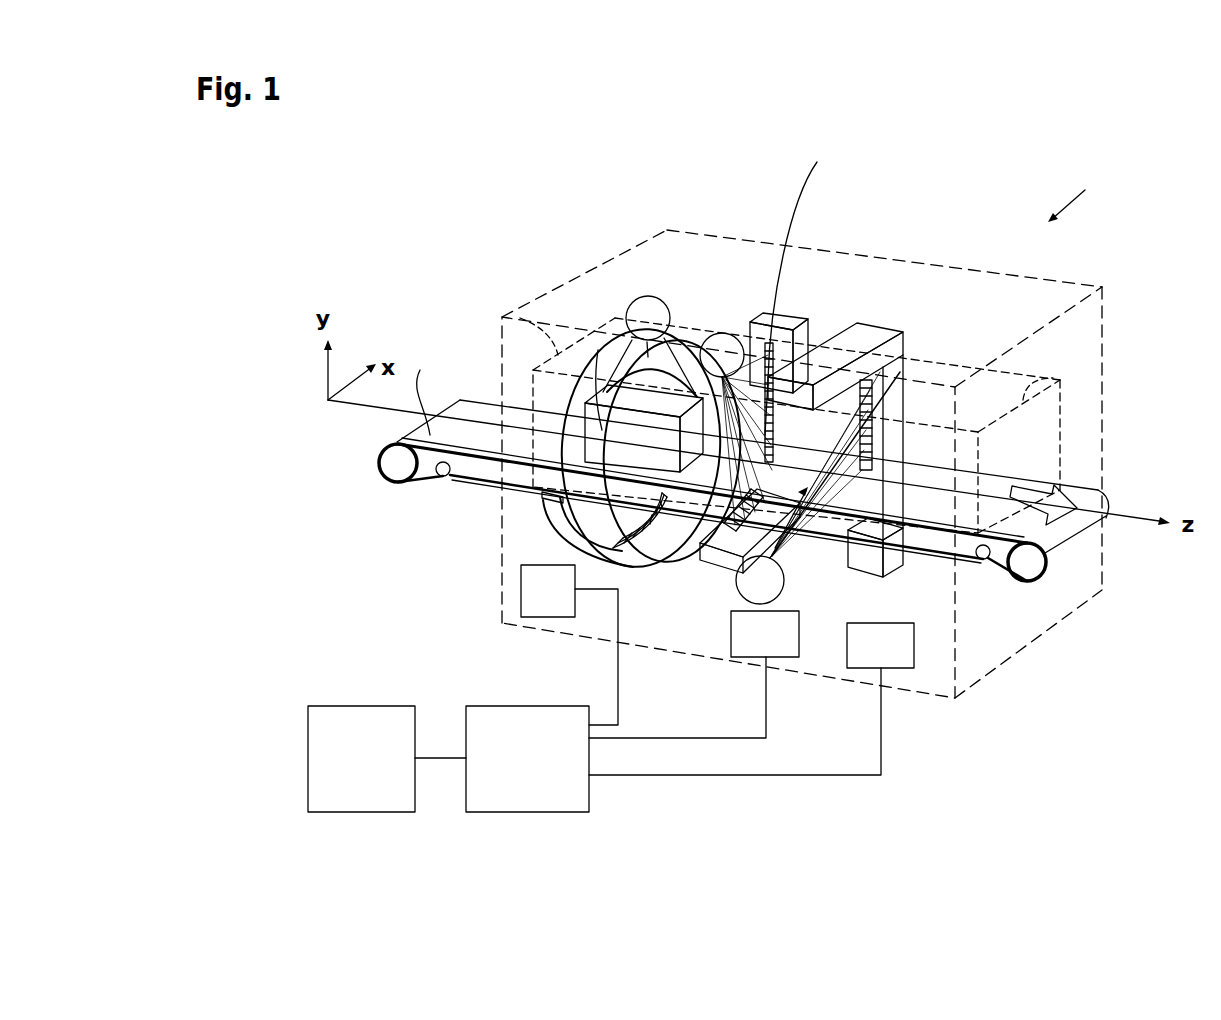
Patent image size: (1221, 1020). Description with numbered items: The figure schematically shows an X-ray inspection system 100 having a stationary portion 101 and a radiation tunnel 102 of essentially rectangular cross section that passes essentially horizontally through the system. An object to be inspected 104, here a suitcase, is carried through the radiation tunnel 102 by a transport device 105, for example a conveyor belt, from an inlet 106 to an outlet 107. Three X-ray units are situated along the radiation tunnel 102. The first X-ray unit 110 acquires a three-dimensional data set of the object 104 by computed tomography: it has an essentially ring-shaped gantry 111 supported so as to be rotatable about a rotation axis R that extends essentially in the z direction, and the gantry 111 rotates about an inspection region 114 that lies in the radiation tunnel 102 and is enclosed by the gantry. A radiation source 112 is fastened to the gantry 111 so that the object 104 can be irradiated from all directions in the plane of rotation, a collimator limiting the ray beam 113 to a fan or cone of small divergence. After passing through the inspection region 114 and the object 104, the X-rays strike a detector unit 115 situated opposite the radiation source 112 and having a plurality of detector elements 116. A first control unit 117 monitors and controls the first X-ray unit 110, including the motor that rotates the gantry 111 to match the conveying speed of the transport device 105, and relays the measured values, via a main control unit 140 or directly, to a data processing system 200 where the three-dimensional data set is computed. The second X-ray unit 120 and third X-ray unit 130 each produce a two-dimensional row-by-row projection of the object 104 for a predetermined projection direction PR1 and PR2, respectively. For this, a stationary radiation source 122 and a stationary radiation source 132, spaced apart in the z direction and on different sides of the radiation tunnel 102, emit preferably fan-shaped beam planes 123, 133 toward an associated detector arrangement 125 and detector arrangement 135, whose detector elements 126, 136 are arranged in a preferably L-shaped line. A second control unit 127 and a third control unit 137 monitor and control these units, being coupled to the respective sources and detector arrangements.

The X-ray inspection system 100 is at (1097, 192).
The stationary portion 101 is at (660, 243).
The radiation tunnel 102 is at (1003, 443).
The object to be inspected 104 is at (614, 450).
The transport device 105 is at (430, 423).
The inlet 106 is at (538, 346).
The outlet 107 is at (1040, 376).
The first X-ray unit 110 is at (676, 270).
The gantry 111 is at (600, 350).
The radiation source 112 is at (660, 312).
The ray beam 113 is at (658, 345).
The inspection region 114 is at (635, 345).
The detector unit 115 is at (575, 537).
The detector elements 116 is at (670, 555).
The first control unit 117 is at (569, 645).
The second X-ray unit 120 is at (809, 295).
The stationary radiation source 122 is at (718, 343).
The beam plane 123 is at (580, 498).
The detector arrangement 125 is at (792, 322).
The detector elements 126 is at (758, 520).
The second control unit 127 is at (694, 674).
The third X-ray unit 130 is at (905, 292).
The stationary radiation source 132 is at (750, 595).
The beam plane 133 is at (880, 372).
The detector arrangement 135 is at (876, 336).
The detector elements 136 is at (882, 433).
The third control unit 137 is at (751, 699).
The main control unit 140 is at (527, 759).
The data processing system 200 is at (342, 770).
The projection direction PR1 is at (805, 286).
The projection direction PR2 is at (806, 508).
The rotation axis R is at (423, 390).